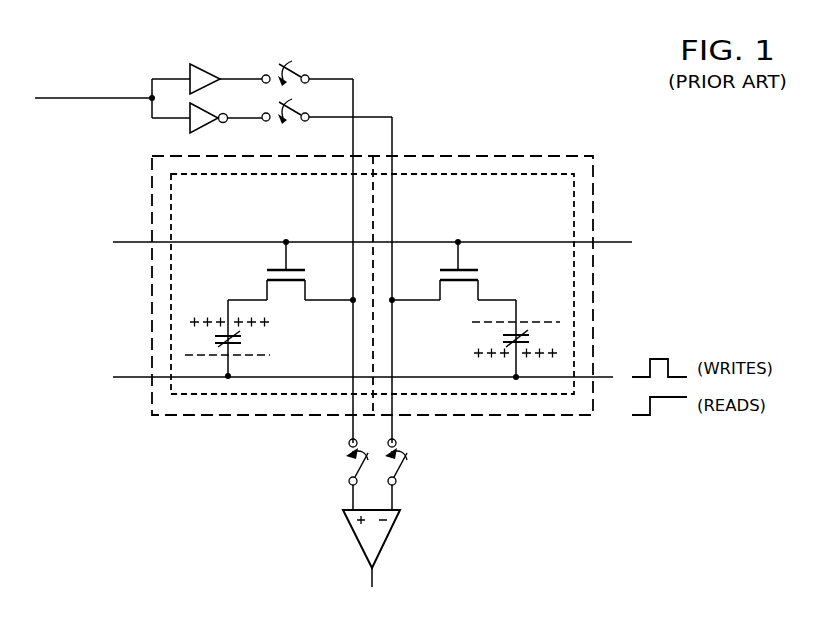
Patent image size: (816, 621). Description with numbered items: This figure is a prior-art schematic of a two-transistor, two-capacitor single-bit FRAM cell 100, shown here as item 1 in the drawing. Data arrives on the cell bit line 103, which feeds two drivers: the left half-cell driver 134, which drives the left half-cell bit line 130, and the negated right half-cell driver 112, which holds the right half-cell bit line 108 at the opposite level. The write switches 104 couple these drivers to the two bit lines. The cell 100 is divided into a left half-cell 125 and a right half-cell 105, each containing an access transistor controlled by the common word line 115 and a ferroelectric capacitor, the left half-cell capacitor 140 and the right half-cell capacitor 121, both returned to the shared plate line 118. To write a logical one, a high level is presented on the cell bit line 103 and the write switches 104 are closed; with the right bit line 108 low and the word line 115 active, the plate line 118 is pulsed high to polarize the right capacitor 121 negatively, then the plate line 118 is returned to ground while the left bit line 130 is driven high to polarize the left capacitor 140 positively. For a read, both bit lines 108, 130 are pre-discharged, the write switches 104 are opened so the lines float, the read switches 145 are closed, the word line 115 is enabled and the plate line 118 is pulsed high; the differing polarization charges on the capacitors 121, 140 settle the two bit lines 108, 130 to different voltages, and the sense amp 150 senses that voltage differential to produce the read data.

The bit line input 1 is at (87, 99).
The cell bit line 103 is at (92, 102).
The left half-cell driver 134 is at (208, 66).
The negated right half-cell driver 112 is at (184, 124).
The write switches 104 is at (296, 66).
The left half-cell bit line 130 is at (353, 210).
The right half-cell bit line 108 is at (392, 318).
The right half-cell 105 is at (600, 178).
The FRAM cell 100 is at (562, 222).
The left half-cell 125 is at (145, 200).
The word line 115 is at (613, 241).
The left half-cell capacitor 140 is at (240, 338).
The right half-cell capacitor 121 is at (508, 336).
The plate line 118 is at (130, 379).
The read switches 145 is at (400, 470).
The sense amp 150 is at (354, 545).